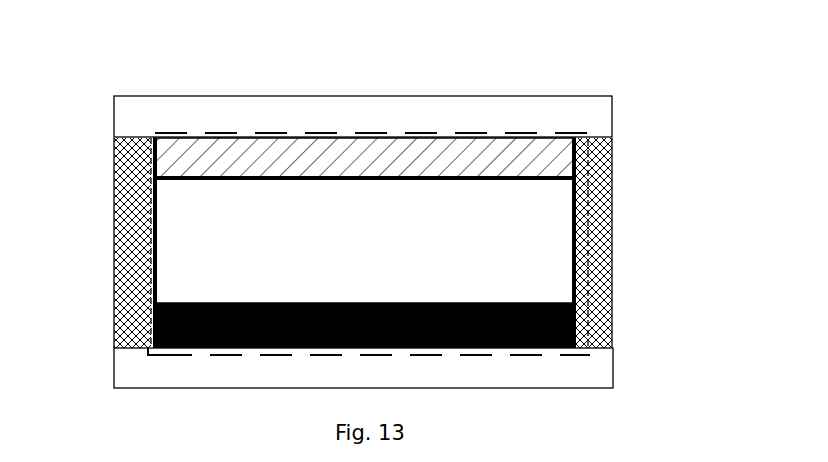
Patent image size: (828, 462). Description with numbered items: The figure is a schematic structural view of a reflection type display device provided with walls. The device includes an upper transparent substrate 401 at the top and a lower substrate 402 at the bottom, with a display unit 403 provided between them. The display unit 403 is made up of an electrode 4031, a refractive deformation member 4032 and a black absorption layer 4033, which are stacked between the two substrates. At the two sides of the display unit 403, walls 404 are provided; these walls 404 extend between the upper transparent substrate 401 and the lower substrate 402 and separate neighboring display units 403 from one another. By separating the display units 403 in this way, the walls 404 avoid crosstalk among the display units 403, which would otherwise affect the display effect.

The upper transparent substrate 401 is at (394, 85).
The lower substrate 402 is at (403, 341).
The display unit 403 is at (421, 205).
The electrode 4031 is at (364, 120).
The refractive deformation member 4032 is at (411, 232).
The black absorption layer 4033 is at (423, 301).
The wall 404 is at (364, 227).